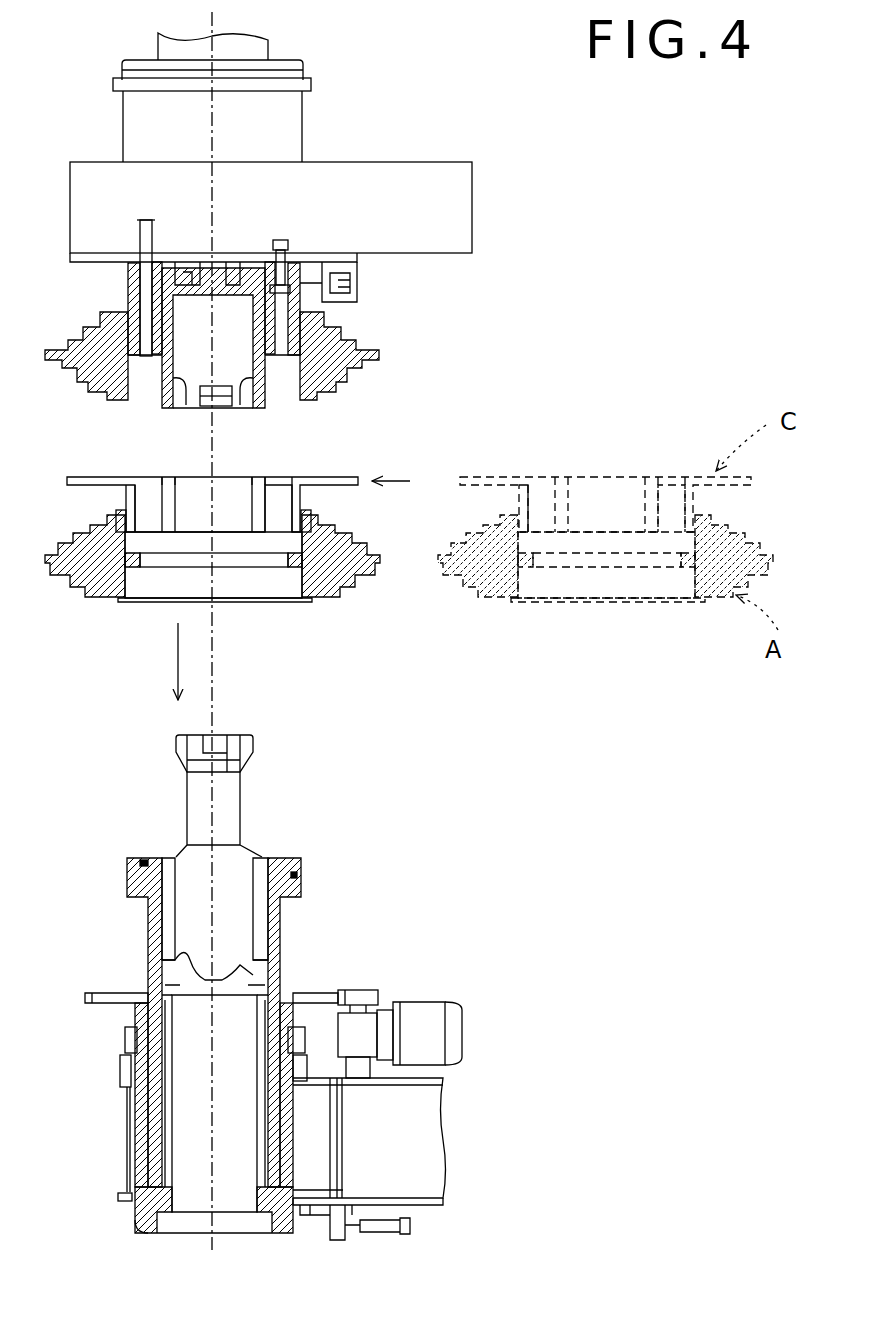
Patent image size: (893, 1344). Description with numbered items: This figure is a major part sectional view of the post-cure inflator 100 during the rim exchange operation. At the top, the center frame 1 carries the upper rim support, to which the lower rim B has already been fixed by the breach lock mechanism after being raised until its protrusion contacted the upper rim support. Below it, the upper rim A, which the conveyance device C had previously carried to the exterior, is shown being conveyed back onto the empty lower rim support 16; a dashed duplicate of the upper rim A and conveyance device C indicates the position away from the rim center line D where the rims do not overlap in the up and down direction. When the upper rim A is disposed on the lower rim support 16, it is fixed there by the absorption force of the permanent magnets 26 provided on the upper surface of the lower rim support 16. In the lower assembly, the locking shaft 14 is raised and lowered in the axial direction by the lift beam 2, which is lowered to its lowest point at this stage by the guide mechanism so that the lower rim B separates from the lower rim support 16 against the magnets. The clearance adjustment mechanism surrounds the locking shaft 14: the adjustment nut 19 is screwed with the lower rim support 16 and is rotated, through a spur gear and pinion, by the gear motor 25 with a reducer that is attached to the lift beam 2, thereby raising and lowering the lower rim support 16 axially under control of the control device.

The post-cure inflator 100 is at (277, 220).
The center frame 1 is at (362, 175).
The lower rim B is at (380, 340).
The conveyance device C is at (323, 471).
The upper rim A is at (343, 595).
The rim center line D is at (215, 670).
The locking shaft 14 is at (200, 793).
The permanent magnets 26 is at (142, 858).
The lower rim support 16 is at (302, 888).
The adjustment nut 19 is at (132, 1020).
The gear motor 25 is at (424, 1006).
The lift beam 2 is at (430, 1148).